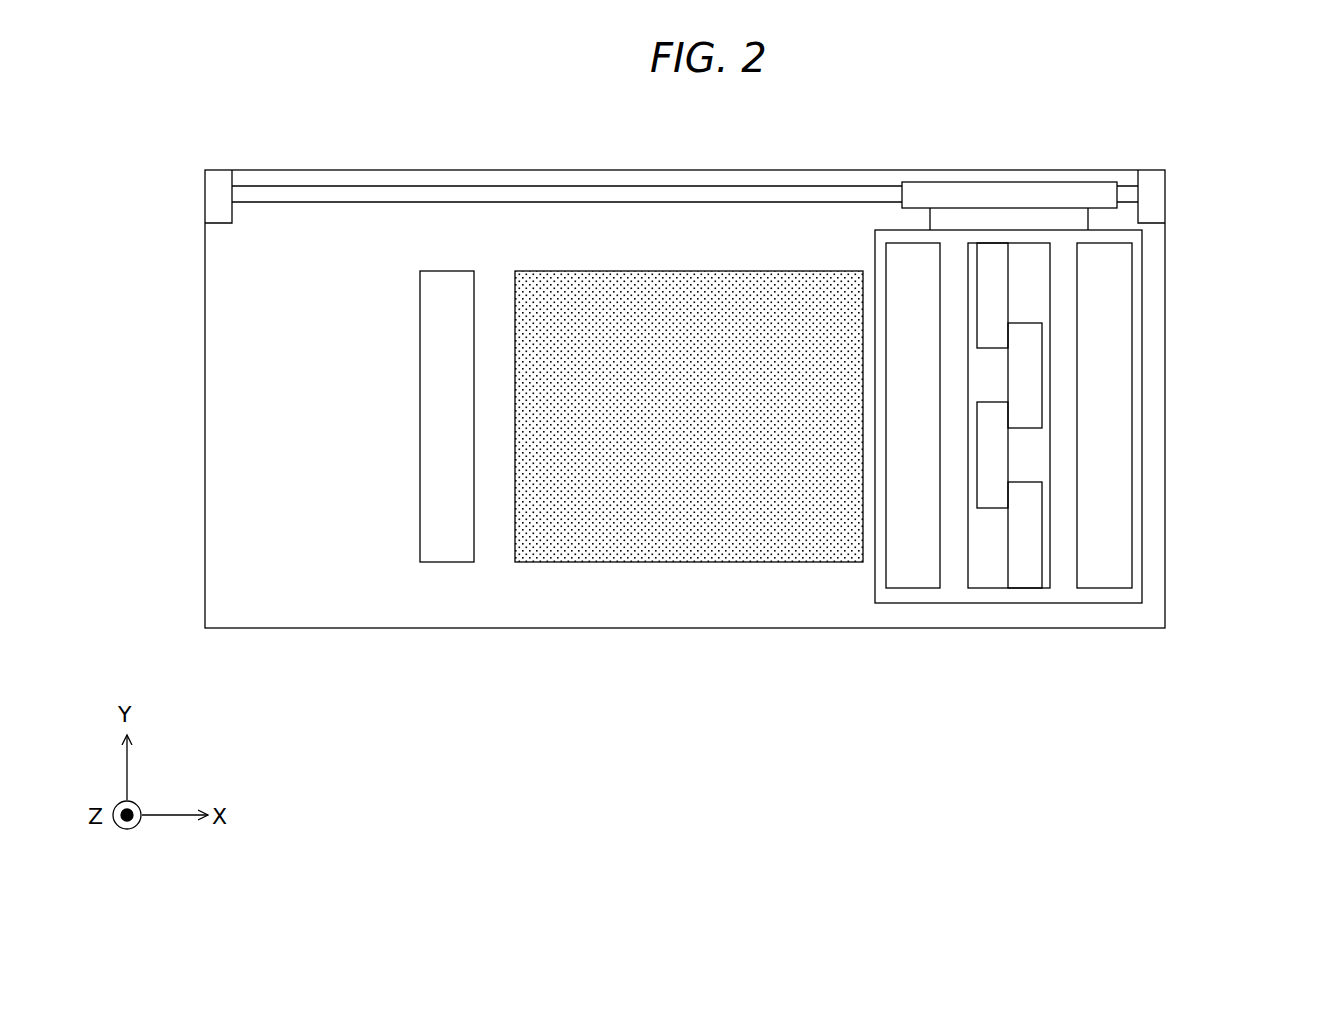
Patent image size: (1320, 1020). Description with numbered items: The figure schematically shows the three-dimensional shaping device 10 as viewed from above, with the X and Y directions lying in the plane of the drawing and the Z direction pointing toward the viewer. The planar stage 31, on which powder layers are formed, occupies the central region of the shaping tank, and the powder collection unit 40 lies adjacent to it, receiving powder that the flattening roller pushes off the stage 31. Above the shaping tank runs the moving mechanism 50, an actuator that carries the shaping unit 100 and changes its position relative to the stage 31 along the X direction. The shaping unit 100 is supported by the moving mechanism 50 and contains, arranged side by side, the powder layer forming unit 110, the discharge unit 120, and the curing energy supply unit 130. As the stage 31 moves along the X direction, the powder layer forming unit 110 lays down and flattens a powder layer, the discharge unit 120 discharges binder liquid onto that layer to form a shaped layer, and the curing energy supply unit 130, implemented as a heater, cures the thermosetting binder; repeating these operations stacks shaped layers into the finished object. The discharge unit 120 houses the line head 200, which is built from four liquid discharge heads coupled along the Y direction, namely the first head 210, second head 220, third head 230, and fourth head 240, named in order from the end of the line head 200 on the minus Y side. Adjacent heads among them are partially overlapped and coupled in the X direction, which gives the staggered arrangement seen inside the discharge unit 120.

The three-dimensional shaping device 10 is at (203, 136).
The stage 31 is at (590, 295).
The powder collection unit 40 is at (428, 270).
The moving mechanism 50 is at (915, 182).
The shaping unit 100 is at (1145, 253).
The powder layer forming unit 110 is at (885, 575).
The discharge unit 120 is at (968, 575).
The curing energy supply unit 130 is at (1132, 300).
The line head 200 is at (1148, 415).
The first head 210 is at (1129, 535).
The second head 220 is at (990, 462).
The third head 230 is at (1025, 380).
The fourth head 240 is at (990, 290).